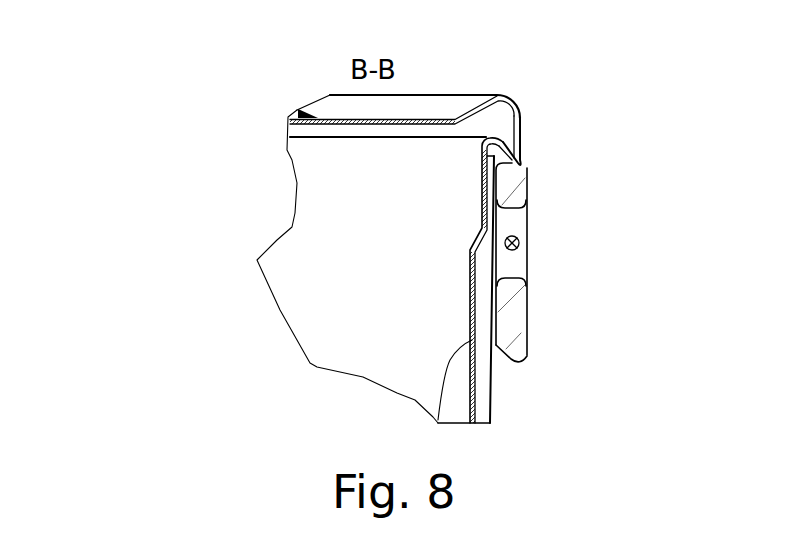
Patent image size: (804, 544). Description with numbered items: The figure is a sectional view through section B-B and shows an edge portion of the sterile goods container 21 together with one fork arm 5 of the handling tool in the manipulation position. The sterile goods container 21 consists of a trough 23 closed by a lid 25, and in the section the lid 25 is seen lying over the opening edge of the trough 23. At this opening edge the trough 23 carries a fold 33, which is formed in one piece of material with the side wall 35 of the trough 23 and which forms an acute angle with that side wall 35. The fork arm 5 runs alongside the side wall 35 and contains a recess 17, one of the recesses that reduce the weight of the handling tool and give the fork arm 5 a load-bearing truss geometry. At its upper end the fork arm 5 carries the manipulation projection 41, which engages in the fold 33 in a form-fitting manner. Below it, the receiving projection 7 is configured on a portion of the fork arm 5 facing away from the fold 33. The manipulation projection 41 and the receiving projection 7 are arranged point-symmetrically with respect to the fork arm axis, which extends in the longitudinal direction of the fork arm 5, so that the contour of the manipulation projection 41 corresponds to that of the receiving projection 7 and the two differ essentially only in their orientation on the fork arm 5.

The sterile goods container 21 is at (192, 151).
The lid 25 is at (291, 120).
The fold 33 is at (503, 143).
The trough 23 is at (317, 287).
The side wall 35 is at (443, 408).
The fork arm 5 is at (523, 298).
The receiving projection 7 is at (515, 336).
The manipulation projection 41 is at (506, 180).
The recess 17 is at (519, 243).